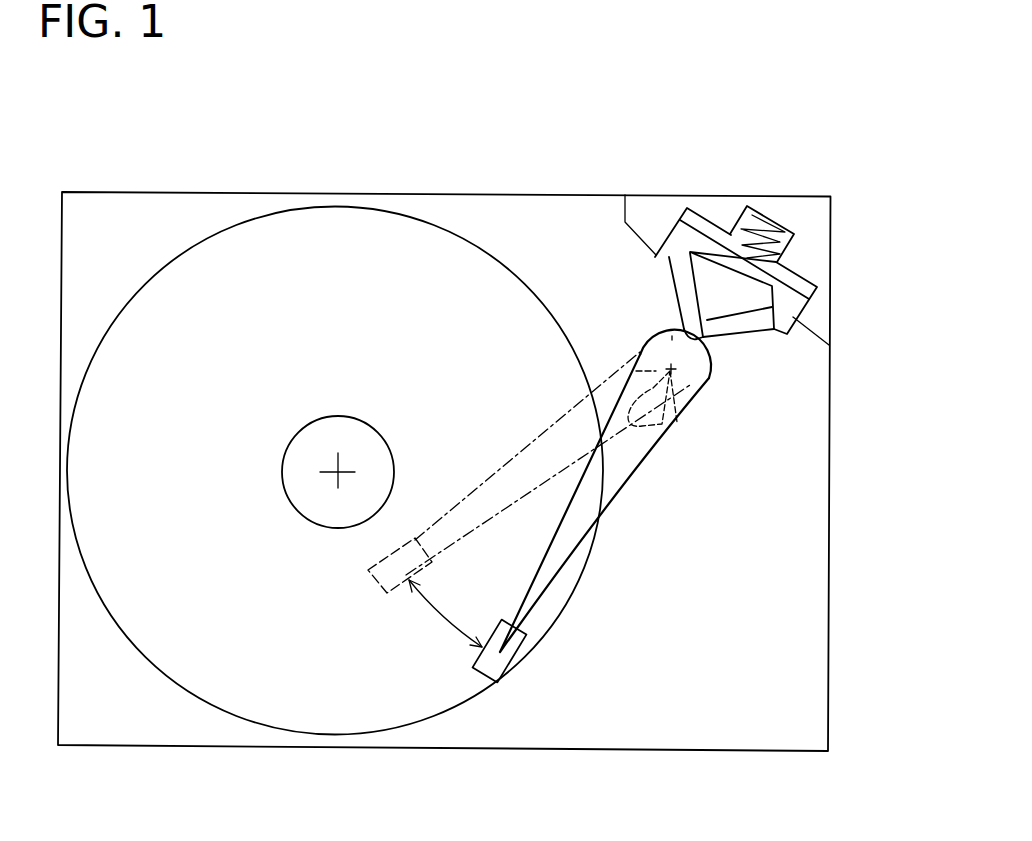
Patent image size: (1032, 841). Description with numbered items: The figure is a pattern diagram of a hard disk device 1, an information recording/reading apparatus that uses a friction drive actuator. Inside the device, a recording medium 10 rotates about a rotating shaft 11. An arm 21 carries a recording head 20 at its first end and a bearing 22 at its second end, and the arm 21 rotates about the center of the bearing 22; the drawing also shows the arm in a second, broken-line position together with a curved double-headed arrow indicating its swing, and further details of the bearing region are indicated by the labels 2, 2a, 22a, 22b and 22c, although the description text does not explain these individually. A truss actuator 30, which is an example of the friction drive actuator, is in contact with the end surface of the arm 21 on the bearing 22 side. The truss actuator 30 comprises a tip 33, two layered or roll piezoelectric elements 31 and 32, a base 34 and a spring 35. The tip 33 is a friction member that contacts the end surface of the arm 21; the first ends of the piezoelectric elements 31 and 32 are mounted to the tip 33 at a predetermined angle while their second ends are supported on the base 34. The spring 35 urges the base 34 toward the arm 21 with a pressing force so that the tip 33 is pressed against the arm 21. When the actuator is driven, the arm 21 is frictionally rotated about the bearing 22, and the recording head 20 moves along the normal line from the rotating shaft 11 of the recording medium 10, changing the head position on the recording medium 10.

The hard disk device 1 is at (829, 508).
The head actuator 2 is at (609, 475).
The head actuator in retracted position 2a is at (596, 390).
The recording medium 10 is at (337, 703).
The rotating shaft 11 is at (333, 477).
The recording head 20 is at (525, 645).
The arm 21 is at (606, 490).
The bearing 22 is at (658, 383).
The pivot bearing 22a is at (672, 335).
The pivot engaging portion 22b is at (660, 372).
The pivot projection 22c is at (686, 367).
The truss actuator 30 is at (735, 288).
The piezoelectric element 31 is at (737, 328).
The piezoelectric element 32 is at (680, 278).
The tip 33 is at (704, 338).
The base 34 is at (788, 303).
The spring 35 is at (772, 230).